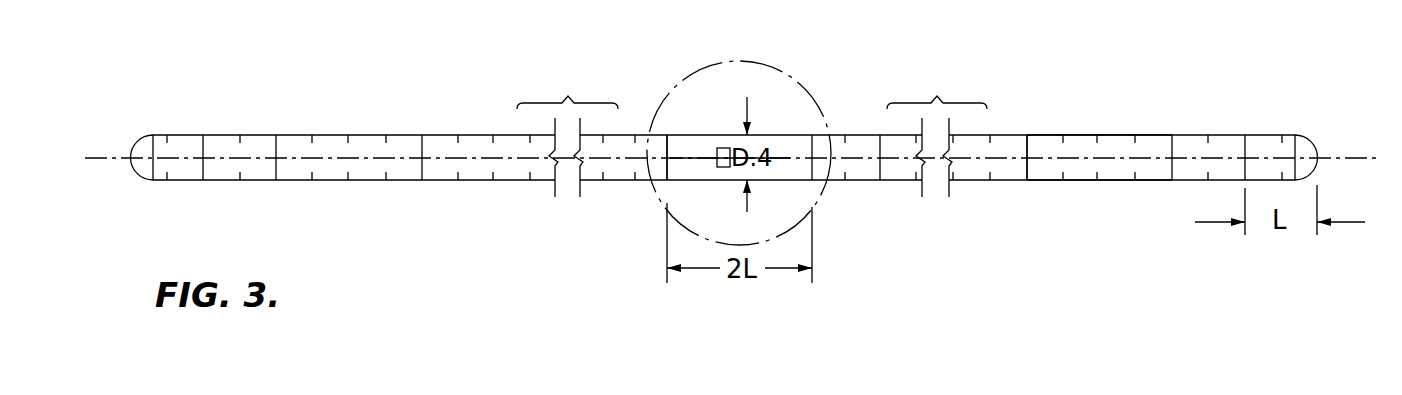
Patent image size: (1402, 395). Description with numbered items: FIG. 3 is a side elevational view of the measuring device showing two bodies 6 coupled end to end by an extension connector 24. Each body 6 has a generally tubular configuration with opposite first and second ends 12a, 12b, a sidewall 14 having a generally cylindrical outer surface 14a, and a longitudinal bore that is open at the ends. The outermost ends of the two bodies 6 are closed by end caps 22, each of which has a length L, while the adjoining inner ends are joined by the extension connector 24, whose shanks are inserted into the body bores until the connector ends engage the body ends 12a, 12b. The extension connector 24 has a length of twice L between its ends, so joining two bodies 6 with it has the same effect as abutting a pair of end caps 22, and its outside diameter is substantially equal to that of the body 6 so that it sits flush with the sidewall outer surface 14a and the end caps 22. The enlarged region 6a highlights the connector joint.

The body 6 is at (198, 185).
The enlarged detail region of rod 6a is at (803, 88).
The end cap 22 is at (133, 153).
The first end 12a is at (203, 135).
The second end 12b is at (667, 180).
The extension connector 24 is at (665, 135).
The sidewall 14 is at (1035, 180).
The outer surface 14a is at (1052, 135).